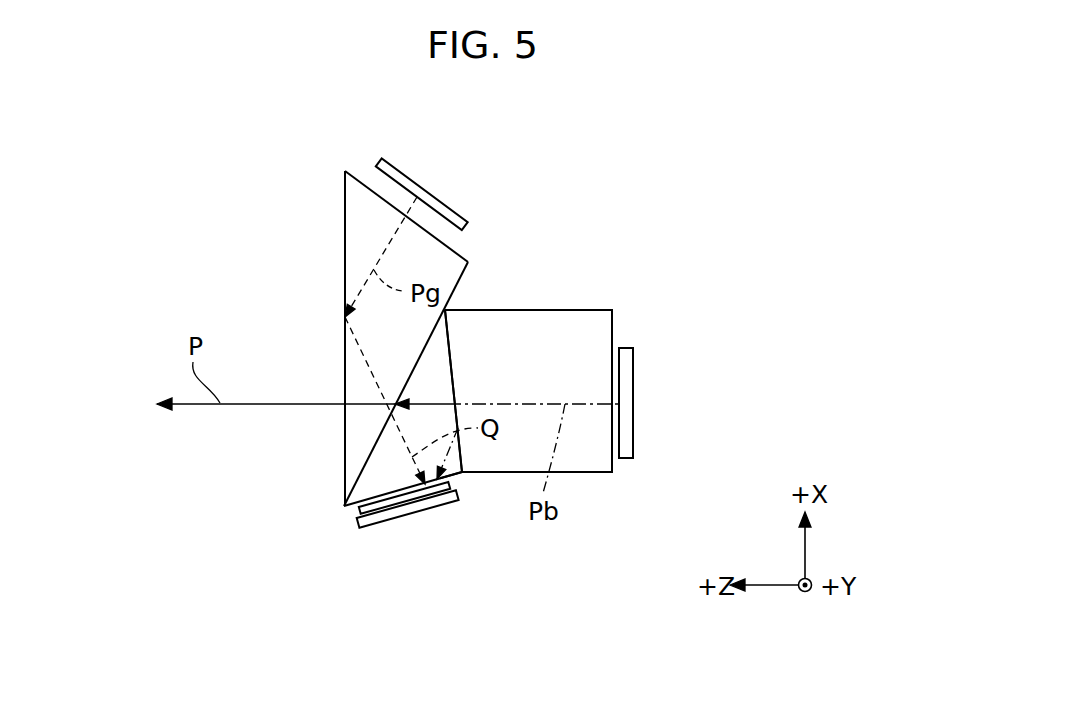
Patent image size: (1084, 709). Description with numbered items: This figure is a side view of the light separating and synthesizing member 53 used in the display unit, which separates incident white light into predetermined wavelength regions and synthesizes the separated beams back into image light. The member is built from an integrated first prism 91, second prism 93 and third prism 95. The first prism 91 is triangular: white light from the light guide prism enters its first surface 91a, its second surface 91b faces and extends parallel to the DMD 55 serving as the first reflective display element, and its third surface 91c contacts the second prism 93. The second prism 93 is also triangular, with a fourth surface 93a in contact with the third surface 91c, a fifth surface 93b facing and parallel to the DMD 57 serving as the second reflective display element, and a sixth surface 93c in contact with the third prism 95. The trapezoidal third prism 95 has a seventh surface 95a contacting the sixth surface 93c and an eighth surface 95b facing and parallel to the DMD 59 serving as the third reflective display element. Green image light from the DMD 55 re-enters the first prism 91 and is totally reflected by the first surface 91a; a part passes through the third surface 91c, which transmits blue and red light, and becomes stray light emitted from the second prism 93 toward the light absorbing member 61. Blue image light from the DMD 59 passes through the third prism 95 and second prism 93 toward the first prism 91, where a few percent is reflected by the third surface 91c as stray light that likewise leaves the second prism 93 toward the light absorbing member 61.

The light separating and synthesizing member 53 is at (562, 178).
The DMD 55 is at (380, 161).
The DMD 57 is at (442, 504).
The DMD 59 is at (633, 372).
The light absorbing member 61 is at (358, 512).
The first prism 91 is at (470, 260).
The first surface 91a is at (345, 232).
The second surface 91b is at (460, 253).
The third surface 91c is at (388, 420).
The second prism 93 is at (466, 268).
The fourth surface 93a is at (345, 503).
The fifth surface 93b is at (462, 480).
The sixth surface 93c is at (447, 352).
The third prism 95 is at (585, 457).
The seventh surface 95a is at (453, 383).
The eighth surface 95b is at (612, 330).